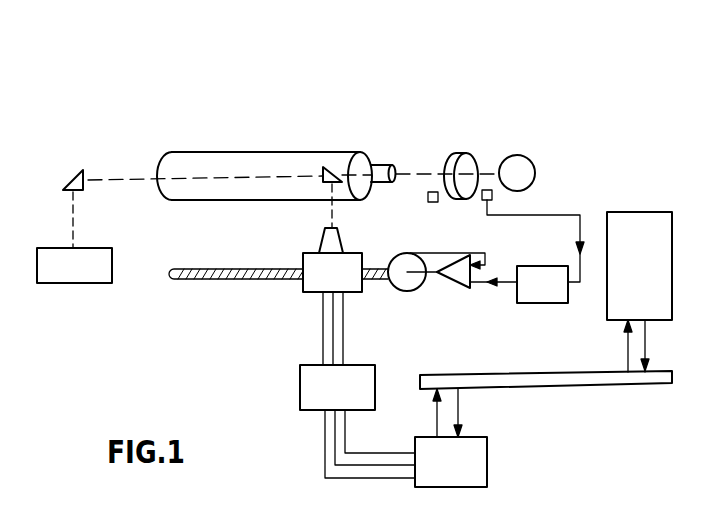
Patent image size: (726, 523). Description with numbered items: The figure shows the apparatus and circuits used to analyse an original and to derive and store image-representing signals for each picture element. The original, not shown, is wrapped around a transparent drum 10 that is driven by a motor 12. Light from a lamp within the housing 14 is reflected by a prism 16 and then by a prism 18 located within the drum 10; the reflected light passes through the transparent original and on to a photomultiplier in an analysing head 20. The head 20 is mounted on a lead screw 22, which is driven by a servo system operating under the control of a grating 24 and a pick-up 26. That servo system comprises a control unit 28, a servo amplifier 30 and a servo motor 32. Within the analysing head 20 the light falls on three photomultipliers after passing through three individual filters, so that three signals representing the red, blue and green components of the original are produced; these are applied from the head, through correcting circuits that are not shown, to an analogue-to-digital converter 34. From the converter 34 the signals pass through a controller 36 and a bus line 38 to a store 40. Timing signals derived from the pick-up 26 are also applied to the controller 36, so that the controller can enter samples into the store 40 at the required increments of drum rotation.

The transparent drum 10 is at (228, 160).
The motor 12 is at (535, 180).
The housing 14 is at (107, 263).
The prism 16 is at (78, 172).
The prism 18 is at (326, 165).
The analysing head 20 is at (350, 258).
The lead screw 22 is at (242, 268).
The grating 24 is at (463, 157).
The pick-up 26 is at (493, 197).
The control unit 28 is at (548, 304).
The servo amplifier 30 is at (460, 287).
The servo motor 32 is at (407, 288).
The analogue-to-digital converter 34 is at (360, 373).
The controller 36 is at (480, 460).
The bus line 38 is at (562, 389).
The store 40 is at (673, 287).